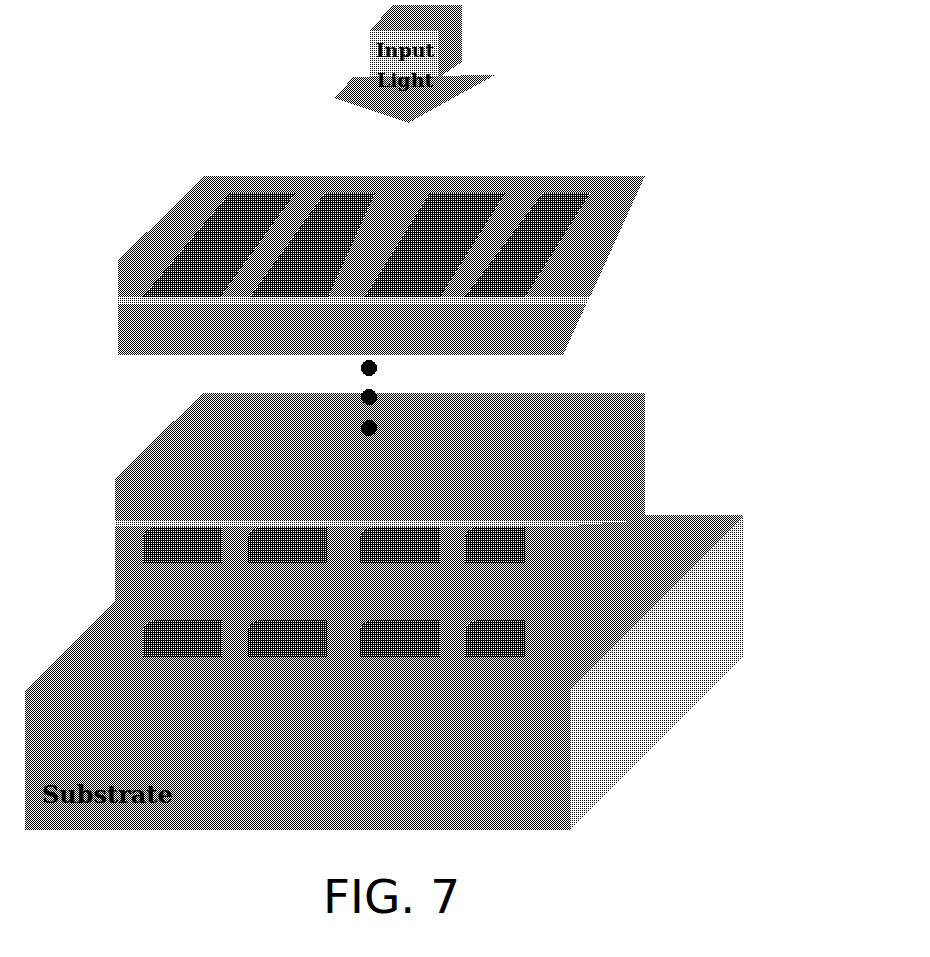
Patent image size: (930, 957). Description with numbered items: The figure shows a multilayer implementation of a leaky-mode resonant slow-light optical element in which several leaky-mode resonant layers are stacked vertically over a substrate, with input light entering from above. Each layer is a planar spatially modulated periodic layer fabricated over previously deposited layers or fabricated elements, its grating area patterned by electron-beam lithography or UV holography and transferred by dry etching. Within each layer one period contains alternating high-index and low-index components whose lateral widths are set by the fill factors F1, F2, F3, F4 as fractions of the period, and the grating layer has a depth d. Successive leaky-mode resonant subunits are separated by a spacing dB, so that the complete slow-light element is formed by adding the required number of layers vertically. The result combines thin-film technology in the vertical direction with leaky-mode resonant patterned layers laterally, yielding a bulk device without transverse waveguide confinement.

The depth d is at (509, 279).
The spacing dB is at (495, 479).
The fill factor F1 is at (197, 567).
The fill factor F2 is at (245, 567).
The fill factor F3 is at (287, 567).
The fill factor F4 is at (357, 567).